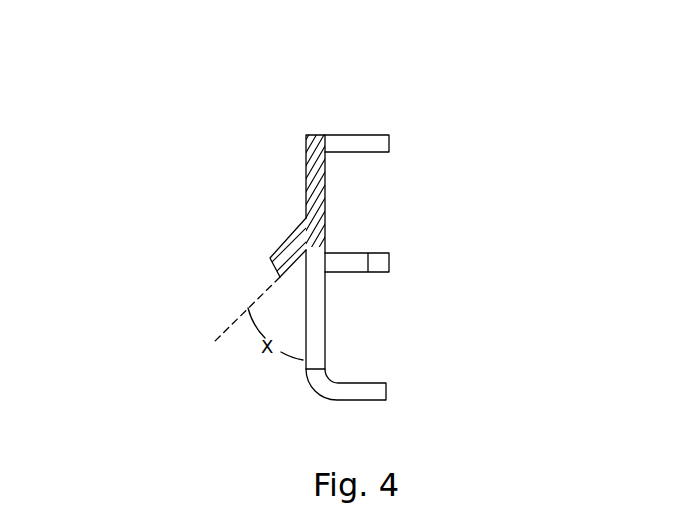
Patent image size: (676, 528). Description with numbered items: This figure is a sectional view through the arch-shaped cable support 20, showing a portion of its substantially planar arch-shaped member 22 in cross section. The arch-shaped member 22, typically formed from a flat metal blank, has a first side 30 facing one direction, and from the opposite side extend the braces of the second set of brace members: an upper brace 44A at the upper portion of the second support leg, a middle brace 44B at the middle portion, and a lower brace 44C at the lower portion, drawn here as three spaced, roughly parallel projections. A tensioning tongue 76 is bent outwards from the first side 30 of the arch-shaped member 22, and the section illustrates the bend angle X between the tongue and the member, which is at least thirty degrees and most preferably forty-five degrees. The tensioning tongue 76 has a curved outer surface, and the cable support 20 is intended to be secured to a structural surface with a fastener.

The arch-shaped cable support 20 is at (172, 118).
The arch-shaped member 22 is at (316, 139).
The first side 30 is at (285, 194).
The upper brace 44A is at (389, 141).
The middle brace 44B is at (389, 262).
The lower brace 44C is at (386, 389).
The tensioning tongue 76 is at (273, 260).